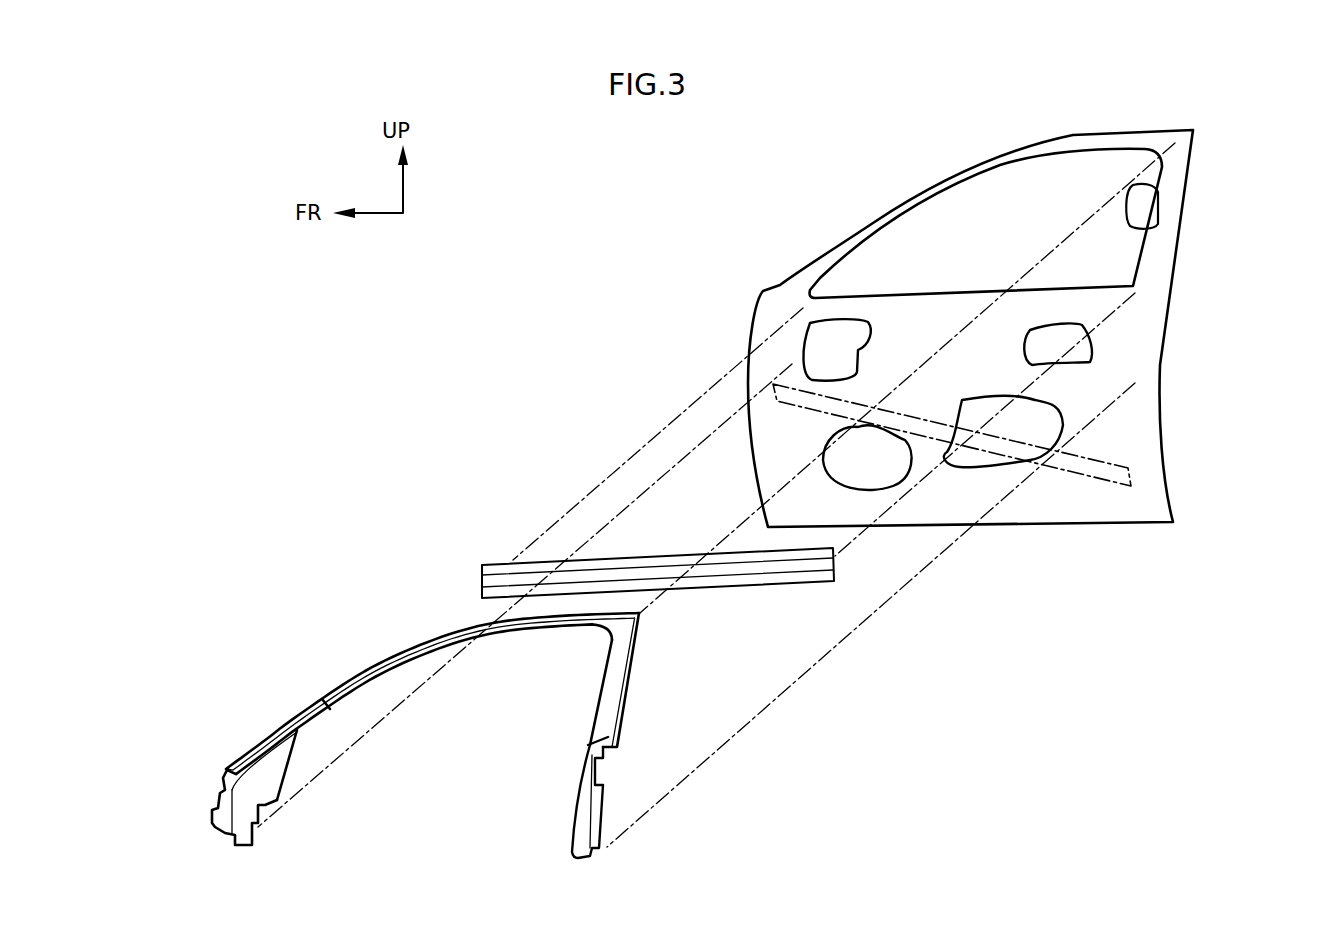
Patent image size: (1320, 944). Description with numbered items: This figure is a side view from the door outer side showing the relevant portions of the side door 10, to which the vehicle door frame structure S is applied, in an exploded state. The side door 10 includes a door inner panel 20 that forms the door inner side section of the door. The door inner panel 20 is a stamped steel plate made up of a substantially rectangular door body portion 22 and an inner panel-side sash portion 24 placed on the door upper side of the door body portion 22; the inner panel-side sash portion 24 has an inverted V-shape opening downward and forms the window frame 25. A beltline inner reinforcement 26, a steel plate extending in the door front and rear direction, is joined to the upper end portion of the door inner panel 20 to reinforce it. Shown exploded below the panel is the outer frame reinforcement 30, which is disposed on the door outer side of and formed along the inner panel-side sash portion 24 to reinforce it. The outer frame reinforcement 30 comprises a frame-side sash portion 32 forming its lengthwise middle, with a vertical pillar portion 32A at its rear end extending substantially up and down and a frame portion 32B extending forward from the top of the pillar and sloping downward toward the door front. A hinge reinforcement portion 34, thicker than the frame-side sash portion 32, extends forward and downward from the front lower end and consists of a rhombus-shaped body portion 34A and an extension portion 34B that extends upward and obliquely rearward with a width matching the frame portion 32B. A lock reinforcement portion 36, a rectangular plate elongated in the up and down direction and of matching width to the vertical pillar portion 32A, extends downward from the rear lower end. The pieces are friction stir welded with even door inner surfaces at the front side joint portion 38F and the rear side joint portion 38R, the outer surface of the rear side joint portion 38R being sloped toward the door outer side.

The side door 10 is at (590, 265).
The vehicle door frame structure S is at (573, 337).
The door inner panel 20 is at (850, 190).
The door body portion 22 is at (1140, 334).
The inner panel-side sash portion 24 is at (1137, 138).
The window frame 25 is at (1137, 185).
The beltline inner reinforcement 26 is at (670, 557).
The outer frame reinforcement 30 is at (400, 612).
The frame-side sash portion 32 is at (497, 684).
The vertical pillar portion 32A is at (633, 676).
The frame portion 32B is at (382, 663).
The hinge reinforcement portion 34 is at (213, 760).
The body portion 34A is at (228, 770).
The extension portion 34B is at (297, 718).
The lock reinforcement portion 36 is at (574, 812).
The front side joint portion 38F is at (328, 697).
The rear side joint portion 38R is at (596, 742).